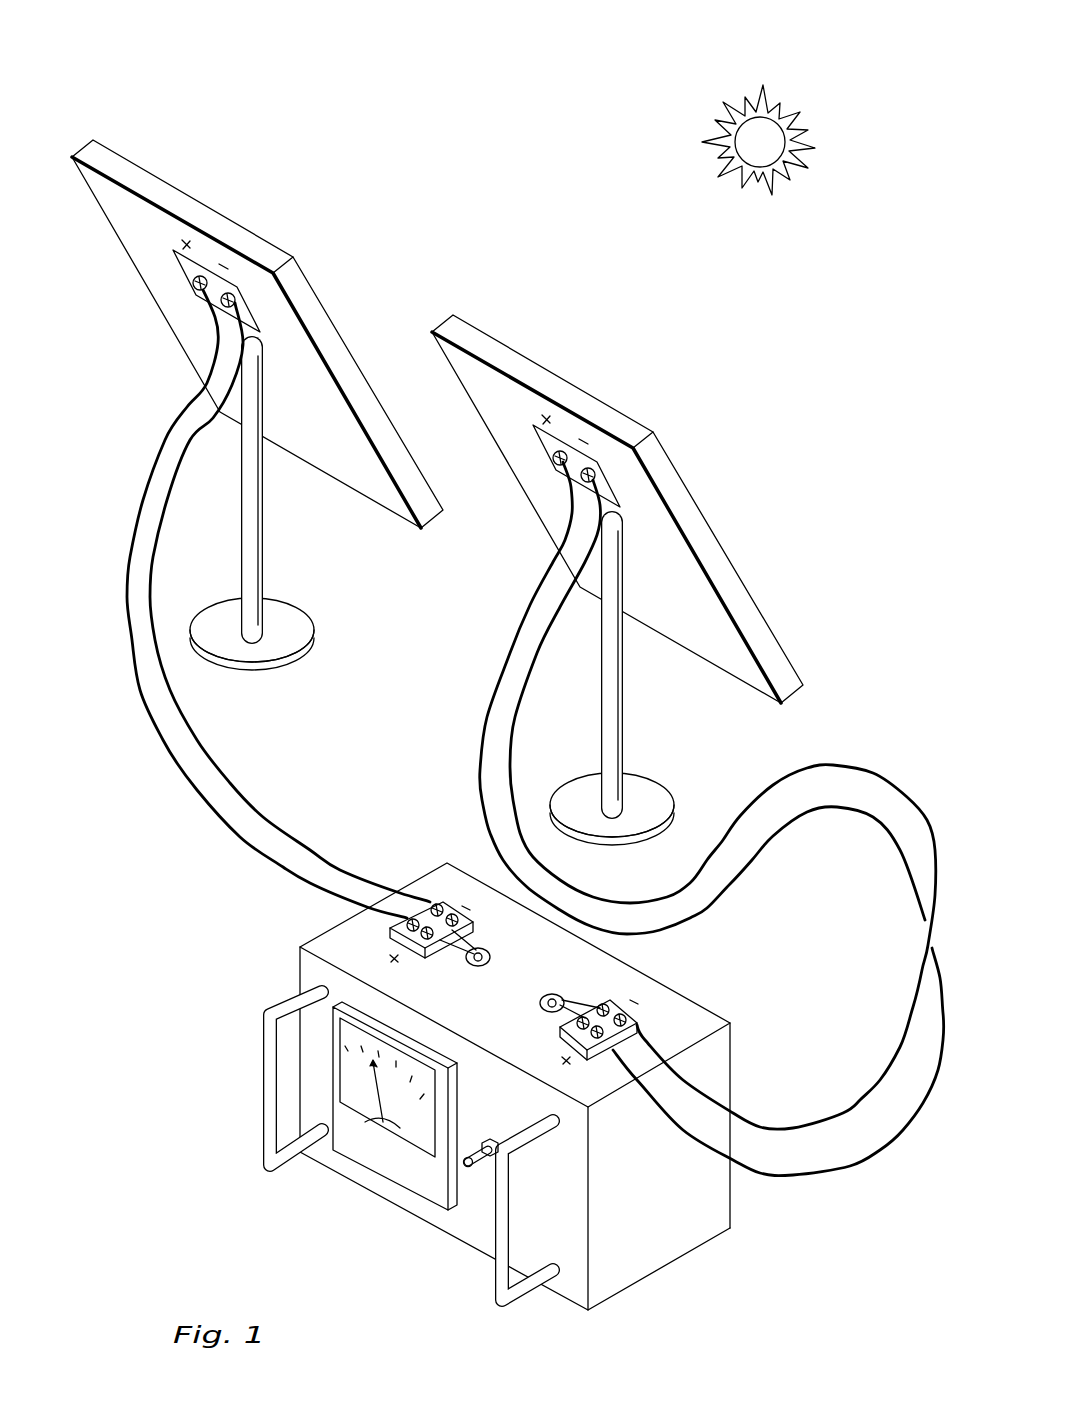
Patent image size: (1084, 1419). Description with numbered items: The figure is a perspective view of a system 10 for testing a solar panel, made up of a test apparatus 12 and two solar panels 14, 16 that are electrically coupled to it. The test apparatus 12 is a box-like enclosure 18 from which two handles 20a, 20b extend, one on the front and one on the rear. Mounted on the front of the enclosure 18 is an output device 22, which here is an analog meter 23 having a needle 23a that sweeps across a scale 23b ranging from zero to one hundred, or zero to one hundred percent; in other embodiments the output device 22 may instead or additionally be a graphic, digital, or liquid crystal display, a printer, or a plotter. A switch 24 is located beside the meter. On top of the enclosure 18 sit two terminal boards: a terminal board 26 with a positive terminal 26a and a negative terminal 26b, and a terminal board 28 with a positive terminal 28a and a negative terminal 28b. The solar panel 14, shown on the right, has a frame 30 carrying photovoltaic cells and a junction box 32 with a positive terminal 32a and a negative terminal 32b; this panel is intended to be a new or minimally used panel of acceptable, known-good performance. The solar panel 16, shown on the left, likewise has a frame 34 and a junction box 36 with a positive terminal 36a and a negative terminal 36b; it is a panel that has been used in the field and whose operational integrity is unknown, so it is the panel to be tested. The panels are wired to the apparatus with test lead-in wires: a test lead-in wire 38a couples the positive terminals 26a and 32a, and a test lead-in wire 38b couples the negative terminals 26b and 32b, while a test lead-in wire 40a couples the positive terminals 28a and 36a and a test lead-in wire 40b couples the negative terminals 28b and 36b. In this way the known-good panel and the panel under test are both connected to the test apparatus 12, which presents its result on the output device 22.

The system 10 is at (352, 72).
The test apparatus 12 is at (509, 1090).
The solar panel 14 is at (682, 463).
The solar panel 16 is at (314, 289).
The enclosure 18 is at (687, 1250).
The handle 20a is at (500, 1303).
The handle 20b is at (292, 997).
The output device 22 is at (458, 1190).
The analog meter 23 is at (322, 1130).
The needle 23a is at (376, 1105).
The scale 23b is at (346, 1035).
The switch 24 is at (475, 1150).
The terminal board 26 is at (563, 1022).
The positive terminal 26a is at (598, 1050).
The negative terminal 26b is at (618, 1008).
The terminal board 28 is at (379, 921).
The positive terminal 28a is at (405, 930).
The negative terminal 28b is at (443, 905).
The frame 30 is at (732, 678).
The junction box 32 is at (567, 462).
The positive terminal 32a is at (557, 462).
The negative terminal 32b is at (592, 472).
The frame 34 is at (372, 503).
The junction box 36 is at (207, 291).
The positive terminal 36a is at (197, 287).
The negative terminal 36b is at (232, 297).
The test lead-in wire 38a is at (776, 1180).
The test lead-in wire 38b is at (795, 1128).
The test lead-in wire 40a is at (240, 842).
The test lead-in wire 40b is at (272, 814).